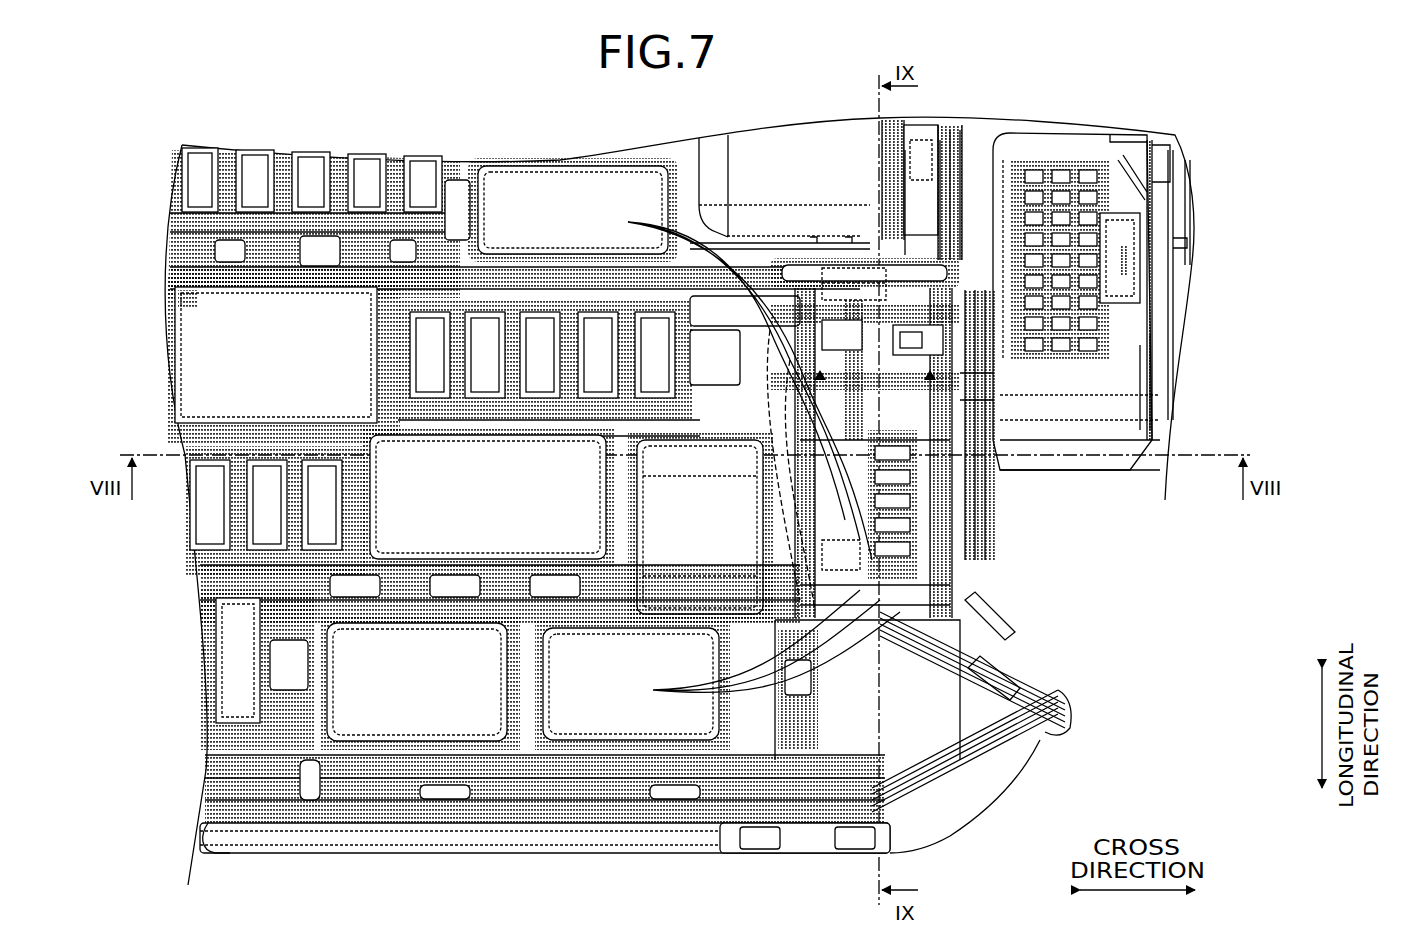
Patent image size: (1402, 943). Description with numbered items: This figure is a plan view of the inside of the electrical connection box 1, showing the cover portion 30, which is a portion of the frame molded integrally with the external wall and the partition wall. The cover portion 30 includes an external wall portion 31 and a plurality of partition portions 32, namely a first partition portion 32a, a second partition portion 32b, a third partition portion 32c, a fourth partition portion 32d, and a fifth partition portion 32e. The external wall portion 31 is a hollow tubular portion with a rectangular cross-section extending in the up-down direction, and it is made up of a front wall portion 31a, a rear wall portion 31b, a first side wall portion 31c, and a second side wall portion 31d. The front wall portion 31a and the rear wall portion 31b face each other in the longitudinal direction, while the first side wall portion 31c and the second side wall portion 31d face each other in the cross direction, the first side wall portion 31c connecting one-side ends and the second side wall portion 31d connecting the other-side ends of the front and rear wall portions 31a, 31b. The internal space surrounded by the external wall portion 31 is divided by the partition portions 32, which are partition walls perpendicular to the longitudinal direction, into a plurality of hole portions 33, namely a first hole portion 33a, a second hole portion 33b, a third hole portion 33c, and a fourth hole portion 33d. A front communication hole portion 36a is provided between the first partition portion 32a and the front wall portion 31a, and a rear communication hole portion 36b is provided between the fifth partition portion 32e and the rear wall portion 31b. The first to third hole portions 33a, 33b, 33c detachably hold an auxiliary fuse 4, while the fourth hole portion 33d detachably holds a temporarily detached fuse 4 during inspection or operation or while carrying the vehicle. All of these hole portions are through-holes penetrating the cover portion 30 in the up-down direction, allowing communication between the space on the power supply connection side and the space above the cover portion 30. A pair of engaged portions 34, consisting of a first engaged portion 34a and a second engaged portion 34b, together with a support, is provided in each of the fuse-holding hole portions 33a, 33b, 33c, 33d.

The electrical junction box 1 is at (309, 112).
The auxiliary fuse 4 is at (860, 360).
The cover portion 30 is at (865, 282).
The external wall portion 31 is at (975, 285).
The front wall portion 31a is at (828, 760).
The rear wall portion 31b is at (960, 200).
The first side wall portion 31c is at (780, 463).
The second side wall portion 31d is at (970, 375).
The partition portions 32 is at (1190, 730).
The first partition portion 32a is at (917, 545).
The second partition portion 32b is at (917, 522).
The third partition portion 32c is at (917, 490).
The fourth partition portion 32d is at (917, 468).
The fifth partition portion 32e is at (917, 440).
The hole portions 33 is at (1091, 582).
The first hole portion 33a is at (1010, 718).
The second hole portion 33b is at (912, 588).
The third hole portion 33c is at (932, 460).
The fourth hole portion 33d is at (1003, 343).
The engaged portions 34 is at (944, 444).
The first engaged portion 34a is at (640, 222).
The second engaged portion 34b is at (1228, 273).
The front communication hole portion 36a is at (952, 718).
The rear communication hole portion 36b is at (857, 235).